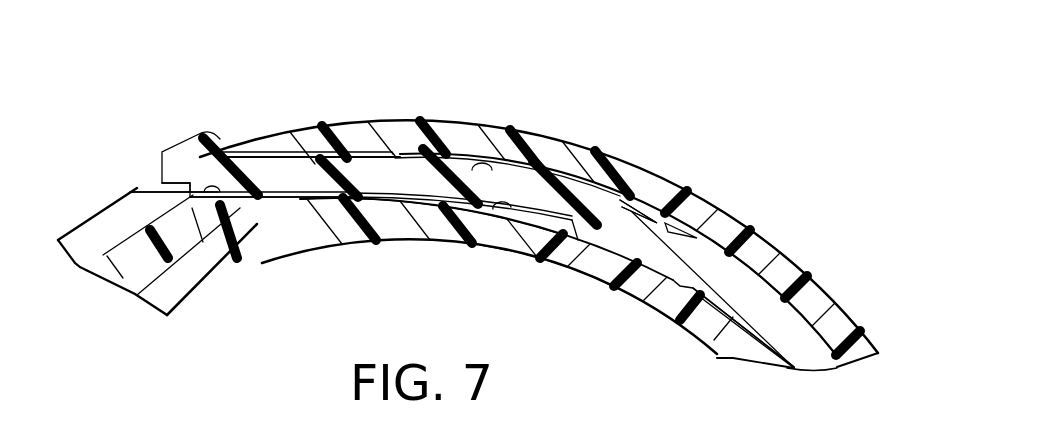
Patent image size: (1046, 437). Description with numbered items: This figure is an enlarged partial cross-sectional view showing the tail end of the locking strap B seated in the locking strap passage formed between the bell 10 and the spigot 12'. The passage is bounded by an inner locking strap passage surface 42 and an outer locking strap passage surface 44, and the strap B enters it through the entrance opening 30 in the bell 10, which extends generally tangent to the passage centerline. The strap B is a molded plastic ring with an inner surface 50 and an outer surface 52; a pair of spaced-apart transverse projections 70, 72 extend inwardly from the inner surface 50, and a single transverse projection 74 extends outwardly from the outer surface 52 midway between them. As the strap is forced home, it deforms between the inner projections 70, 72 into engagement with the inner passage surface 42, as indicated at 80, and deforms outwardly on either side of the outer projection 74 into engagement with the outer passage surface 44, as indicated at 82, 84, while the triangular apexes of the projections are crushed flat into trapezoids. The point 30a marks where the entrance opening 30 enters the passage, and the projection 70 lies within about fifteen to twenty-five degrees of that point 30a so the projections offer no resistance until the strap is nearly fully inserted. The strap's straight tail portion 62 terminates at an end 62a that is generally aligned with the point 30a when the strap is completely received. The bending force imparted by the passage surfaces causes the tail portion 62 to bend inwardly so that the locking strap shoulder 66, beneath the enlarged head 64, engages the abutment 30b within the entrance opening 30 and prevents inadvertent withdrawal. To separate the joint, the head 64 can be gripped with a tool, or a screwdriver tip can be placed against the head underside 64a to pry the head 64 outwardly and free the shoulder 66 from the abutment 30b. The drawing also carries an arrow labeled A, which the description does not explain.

The bell 10 is at (369, 121).
The spigot 12' is at (157, 272).
The entrance opening 30 is at (297, 152).
The point 30a is at (394, 155).
The abutment 30b is at (256, 244).
The inner locking strap passage surface 42 is at (484, 214).
The outer locking strap passage surface 44 is at (471, 165).
The locking strap inner surface 50 is at (753, 344).
The locking strap outer surface 52 is at (806, 312).
The tail portion 62 is at (262, 157).
The end of the straight portion 62a is at (391, 206).
The head 64 is at (195, 136).
The head underside 64a is at (150, 196).
The locking strap shoulder 66 is at (176, 184).
The inner transverse projection 70 is at (550, 263).
The inner transverse projection 72 is at (663, 311).
The outer transverse projection 74 is at (680, 228).
The inward deformation 80 is at (643, 293).
The outward deformation 82 is at (600, 193).
The outward deformation 84 is at (737, 258).
The direction arrow A is at (707, 127).
The locking strap B is at (112, 284).